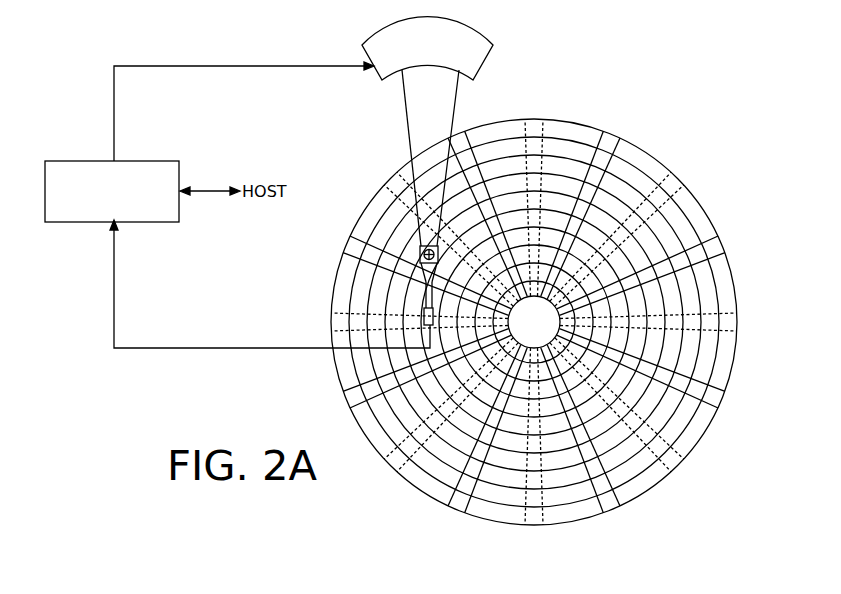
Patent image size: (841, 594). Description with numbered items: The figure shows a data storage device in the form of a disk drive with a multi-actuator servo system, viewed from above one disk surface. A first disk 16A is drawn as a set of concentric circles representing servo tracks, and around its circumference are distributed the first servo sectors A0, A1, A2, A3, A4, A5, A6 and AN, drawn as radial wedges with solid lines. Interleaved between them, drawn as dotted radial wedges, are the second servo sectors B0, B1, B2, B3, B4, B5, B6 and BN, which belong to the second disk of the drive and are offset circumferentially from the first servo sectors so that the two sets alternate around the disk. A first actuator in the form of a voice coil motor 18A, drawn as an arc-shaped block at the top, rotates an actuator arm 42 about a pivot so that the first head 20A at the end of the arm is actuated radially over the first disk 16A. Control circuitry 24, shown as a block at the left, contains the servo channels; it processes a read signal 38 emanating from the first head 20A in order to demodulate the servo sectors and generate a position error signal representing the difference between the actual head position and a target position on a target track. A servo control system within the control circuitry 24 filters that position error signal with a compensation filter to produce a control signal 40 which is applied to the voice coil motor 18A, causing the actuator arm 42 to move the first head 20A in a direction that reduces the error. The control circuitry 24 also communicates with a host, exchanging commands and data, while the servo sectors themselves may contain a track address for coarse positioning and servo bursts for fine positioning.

The first disk 16A is at (660, 146).
The first actuator (voice coil motor) 18A is at (377, 74).
The first head 20A is at (414, 314).
The control circuitry 24 is at (146, 160).
The read signal 38 is at (232, 347).
The control signal 40 is at (114, 99).
The actuator arm 42 is at (412, 148).
The first servo sector AN is at (462, 140).
The first servo sector A0 is at (613, 140).
The first servo sector A1 is at (722, 248).
The first servo sector A2 is at (724, 400).
The first servo sector A3 is at (615, 512).
The first servo sector A4 is at (454, 512).
The first servo sector A5 is at (344, 400).
The first servo sector A6 is at (347, 240).
The second servo sector BN is at (534, 122).
The second servo sector B0 is at (680, 186).
The second servo sector B1 is at (742, 326).
The second servo sector B2 is at (676, 474).
The second servo sector B3 is at (533, 527).
The second servo sector B4 is at (390, 472).
The second servo sector B5 is at (330, 322).
The second servo sector B6 is at (388, 182).